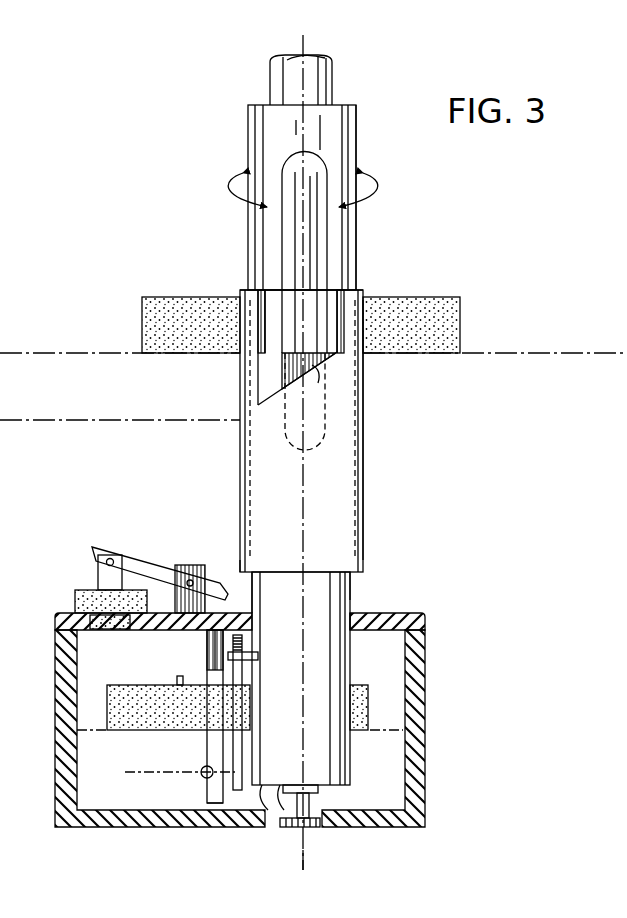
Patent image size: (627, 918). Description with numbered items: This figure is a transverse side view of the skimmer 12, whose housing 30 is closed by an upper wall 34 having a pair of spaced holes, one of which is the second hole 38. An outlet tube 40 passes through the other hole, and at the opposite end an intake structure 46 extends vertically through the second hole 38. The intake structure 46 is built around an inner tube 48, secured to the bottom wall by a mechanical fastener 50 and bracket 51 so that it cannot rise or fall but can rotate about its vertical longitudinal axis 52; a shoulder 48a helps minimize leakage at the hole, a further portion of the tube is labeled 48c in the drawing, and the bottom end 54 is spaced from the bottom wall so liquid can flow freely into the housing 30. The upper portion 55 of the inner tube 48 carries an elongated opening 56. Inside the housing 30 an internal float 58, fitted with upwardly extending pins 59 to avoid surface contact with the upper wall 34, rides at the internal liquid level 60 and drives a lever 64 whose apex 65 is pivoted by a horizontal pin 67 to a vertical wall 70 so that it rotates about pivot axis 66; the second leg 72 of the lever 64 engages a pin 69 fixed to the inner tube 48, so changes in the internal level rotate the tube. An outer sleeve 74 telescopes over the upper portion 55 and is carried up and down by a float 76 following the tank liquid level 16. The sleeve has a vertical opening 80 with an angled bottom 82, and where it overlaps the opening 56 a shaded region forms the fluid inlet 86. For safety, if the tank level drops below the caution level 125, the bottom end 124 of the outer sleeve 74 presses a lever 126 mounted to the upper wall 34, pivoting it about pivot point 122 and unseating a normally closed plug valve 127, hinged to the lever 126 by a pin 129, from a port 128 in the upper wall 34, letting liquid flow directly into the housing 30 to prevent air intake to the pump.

The skimmer 12 is at (520, 240).
The liquid level 16 is at (552, 352).
The housing 30 is at (428, 693).
The upper wall 34 is at (421, 612).
The second hole 38 is at (355, 613).
The outlet tube 40 is at (270, 80).
The intake structure 46 is at (370, 472).
The inner tube 48 is at (250, 127).
The shoulder 48a is at (392, 558).
The shaft lower portion 48c is at (266, 607).
The mechanical fastener 50 is at (318, 830).
The bracket 51 is at (320, 795).
The longitudinal axis 52 is at (303, 872).
The bottom end 54 is at (268, 812).
The upper portion 55 is at (358, 113).
The elongated opening 56 is at (334, 232).
The internal float 58 is at (158, 692).
The pins 59 is at (178, 675).
The liquid level 60 is at (385, 732).
The lever 64 is at (243, 740).
The apex 65 is at (232, 812).
The pivot axis 66 is at (130, 770).
The pin 67 is at (203, 776).
The pin 69 is at (252, 658).
The vertical wall 70 is at (207, 745).
The second leg 72 is at (207, 668).
The outer sleeve 74 is at (240, 478).
The float 76 is at (460, 297).
The opening 80 is at (350, 312).
The angled bottom 82 is at (318, 383).
The inlet 86 is at (282, 373).
The pivot point 122 is at (192, 565).
The bottom end 124 is at (236, 580).
The caution level 125 is at (118, 420).
The lever 126 is at (98, 562).
The plug valve 127 is at (80, 592).
The port 128 is at (80, 620).
The pin 129 is at (112, 558).